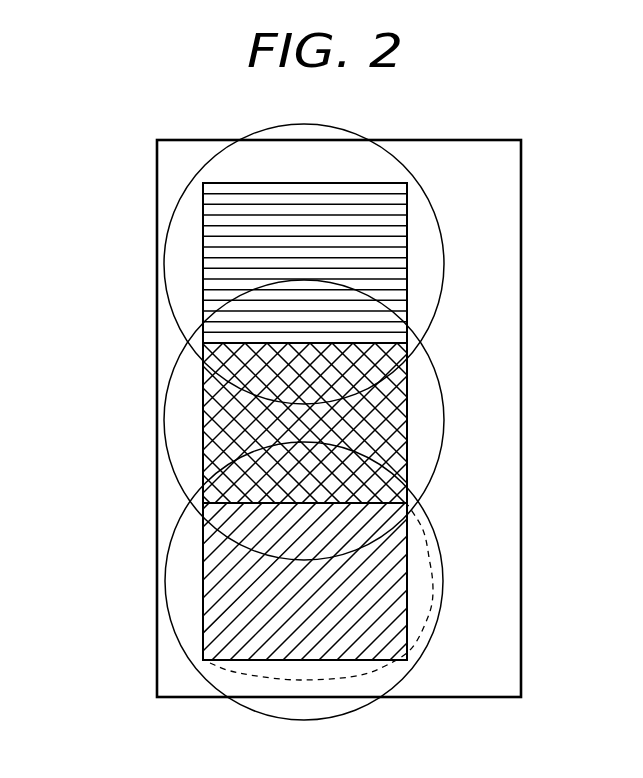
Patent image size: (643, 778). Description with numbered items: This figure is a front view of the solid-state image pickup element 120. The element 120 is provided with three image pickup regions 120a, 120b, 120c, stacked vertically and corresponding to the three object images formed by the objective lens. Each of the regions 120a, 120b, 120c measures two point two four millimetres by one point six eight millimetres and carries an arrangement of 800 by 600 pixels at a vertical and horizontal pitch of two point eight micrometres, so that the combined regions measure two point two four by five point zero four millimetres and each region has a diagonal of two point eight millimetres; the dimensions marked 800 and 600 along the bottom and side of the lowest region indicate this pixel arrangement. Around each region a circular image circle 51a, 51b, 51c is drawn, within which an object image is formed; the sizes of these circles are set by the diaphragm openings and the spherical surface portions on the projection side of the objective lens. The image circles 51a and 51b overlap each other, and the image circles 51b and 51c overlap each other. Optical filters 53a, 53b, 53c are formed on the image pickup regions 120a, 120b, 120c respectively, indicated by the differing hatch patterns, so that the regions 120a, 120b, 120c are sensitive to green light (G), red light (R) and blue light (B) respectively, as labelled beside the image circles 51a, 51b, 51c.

The solid-state image pickup element 120 is at (501, 147).
The image pickup region 120a is at (228, 263).
The optical filter 53a is at (217, 249).
The image pickup region 120b is at (299, 428).
The optical filter 53b is at (217, 423).
The image pickup region 120c is at (282, 581).
The optical filter 53c is at (215, 583).
The image circle 51a is at (443, 263).
The image circle 51b is at (443, 425).
The image circle 51c is at (442, 570).
The pixel count (vertical) 600 is at (422, 577).
The pixel count (horizontal) 800 is at (310, 671).